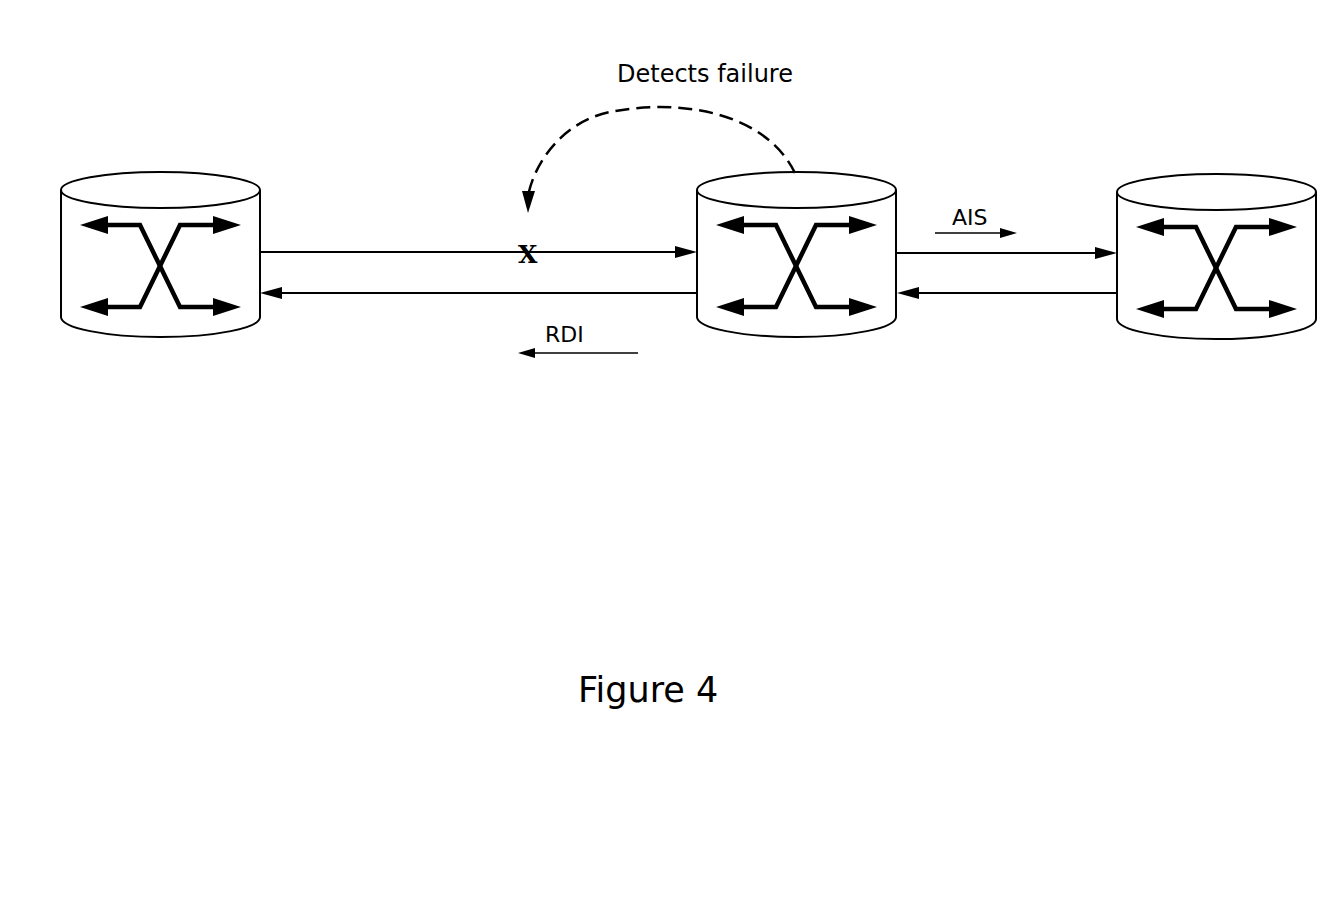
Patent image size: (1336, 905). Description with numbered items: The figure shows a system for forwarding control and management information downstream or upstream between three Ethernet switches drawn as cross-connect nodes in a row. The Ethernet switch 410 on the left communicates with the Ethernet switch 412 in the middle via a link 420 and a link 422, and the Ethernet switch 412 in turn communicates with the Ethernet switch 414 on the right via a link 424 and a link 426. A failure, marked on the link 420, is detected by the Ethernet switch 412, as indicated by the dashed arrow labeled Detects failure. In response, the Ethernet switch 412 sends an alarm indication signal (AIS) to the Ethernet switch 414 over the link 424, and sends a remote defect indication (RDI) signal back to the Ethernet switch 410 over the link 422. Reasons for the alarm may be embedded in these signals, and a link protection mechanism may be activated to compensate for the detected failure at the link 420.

The Ethernet switch 410 is at (208, 173).
The Ethernet switch 412 is at (843, 175).
The Ethernet switch 414 is at (1265, 177).
The link 420 is at (407, 251).
The link 422 is at (440, 293).
The link 424 is at (1057, 253).
The link 426 is at (955, 295).